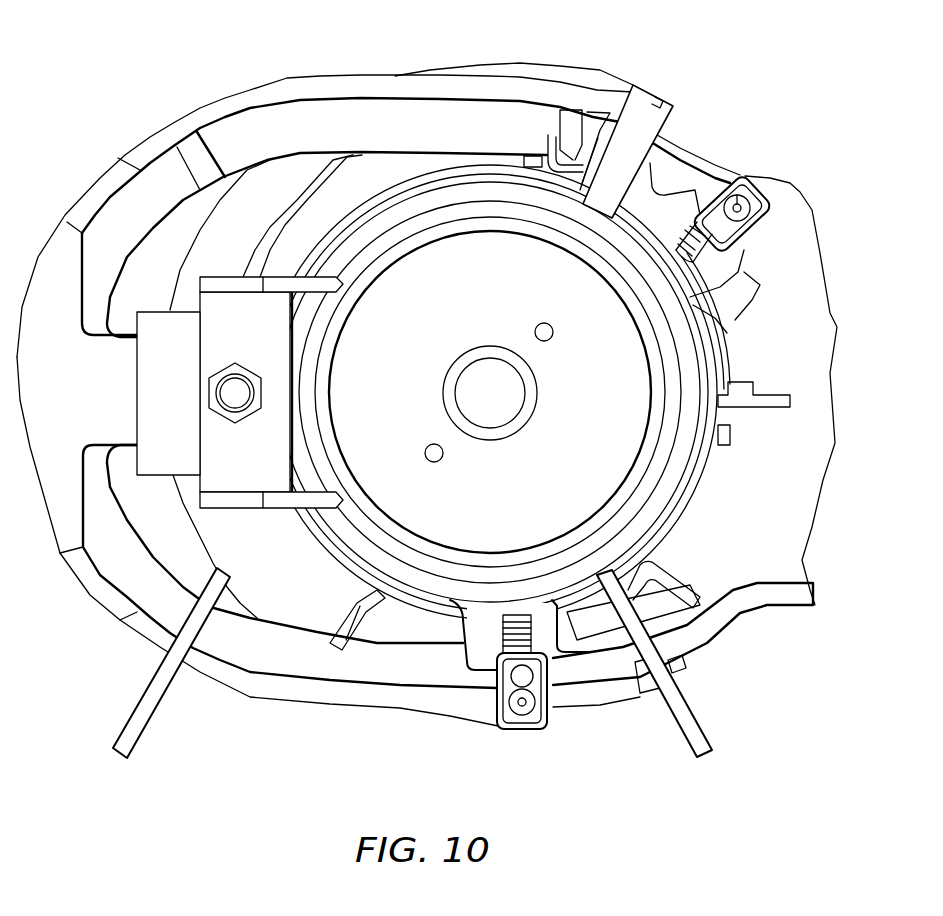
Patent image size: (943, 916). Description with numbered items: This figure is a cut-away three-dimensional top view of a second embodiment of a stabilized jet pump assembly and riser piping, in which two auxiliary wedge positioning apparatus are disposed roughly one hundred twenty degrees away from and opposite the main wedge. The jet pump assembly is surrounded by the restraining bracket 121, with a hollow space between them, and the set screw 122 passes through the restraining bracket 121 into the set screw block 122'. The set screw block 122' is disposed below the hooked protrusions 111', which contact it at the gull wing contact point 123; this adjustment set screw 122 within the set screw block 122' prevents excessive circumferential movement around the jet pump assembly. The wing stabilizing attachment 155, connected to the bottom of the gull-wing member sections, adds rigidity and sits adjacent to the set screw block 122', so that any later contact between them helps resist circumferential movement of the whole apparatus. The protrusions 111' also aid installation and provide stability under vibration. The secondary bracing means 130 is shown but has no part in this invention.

The protrusion 111' is at (490, 321).
The wing stabilizing attachment 155 is at (564, 152).
The set screw block 122' is at (686, 340).
The set screw 122 is at (675, 361).
The contact point 123 is at (675, 125).
The secondary bracing means 130 is at (140, 720).
The restraining bracket 121 is at (607, 687).